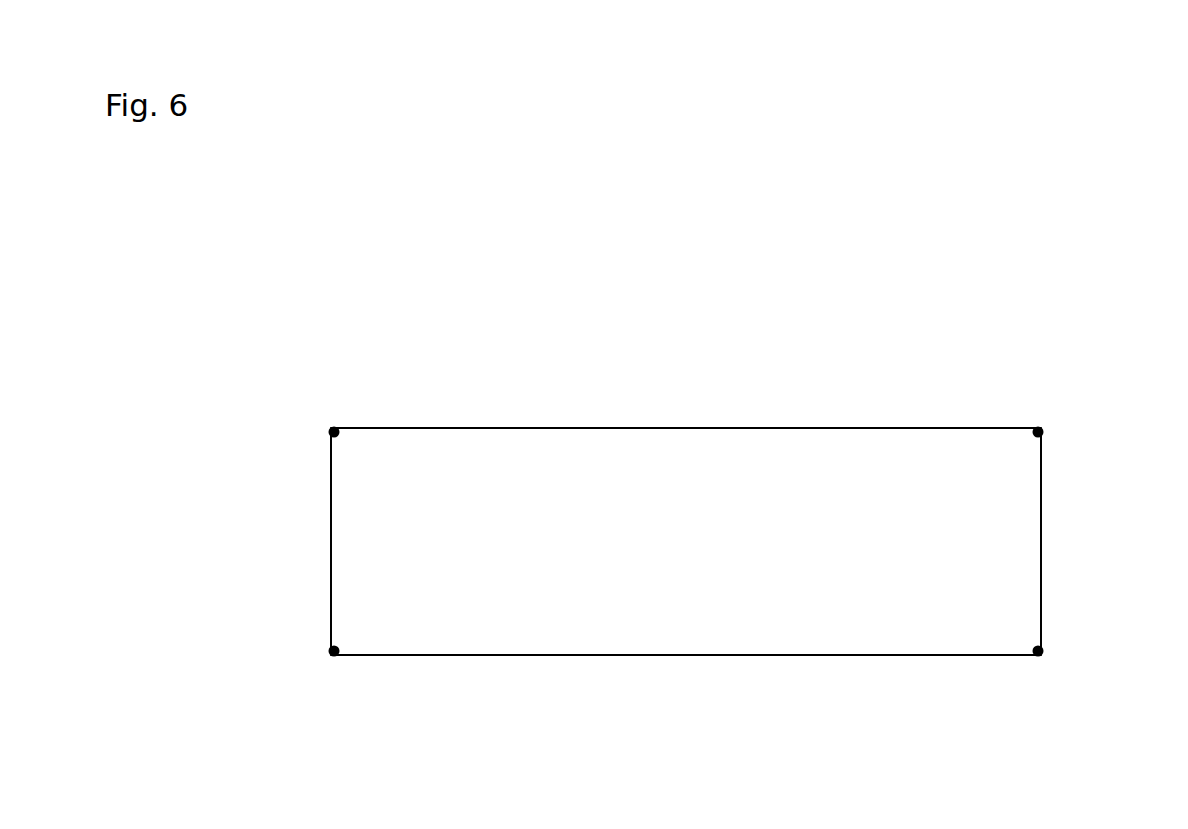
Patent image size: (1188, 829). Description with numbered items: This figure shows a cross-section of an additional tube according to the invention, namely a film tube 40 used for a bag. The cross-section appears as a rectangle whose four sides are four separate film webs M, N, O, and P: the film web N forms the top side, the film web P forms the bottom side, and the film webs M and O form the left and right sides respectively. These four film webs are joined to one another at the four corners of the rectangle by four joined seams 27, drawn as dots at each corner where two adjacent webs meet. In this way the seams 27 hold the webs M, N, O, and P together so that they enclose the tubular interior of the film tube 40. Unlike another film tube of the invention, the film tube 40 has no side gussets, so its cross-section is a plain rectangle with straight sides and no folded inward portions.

The film tube 40 is at (856, 362).
The joined seams 27 is at (331, 428).
The film web N is at (630, 415).
The film web M is at (330, 543).
The film web O is at (1055, 541).
The film web P is at (670, 680).